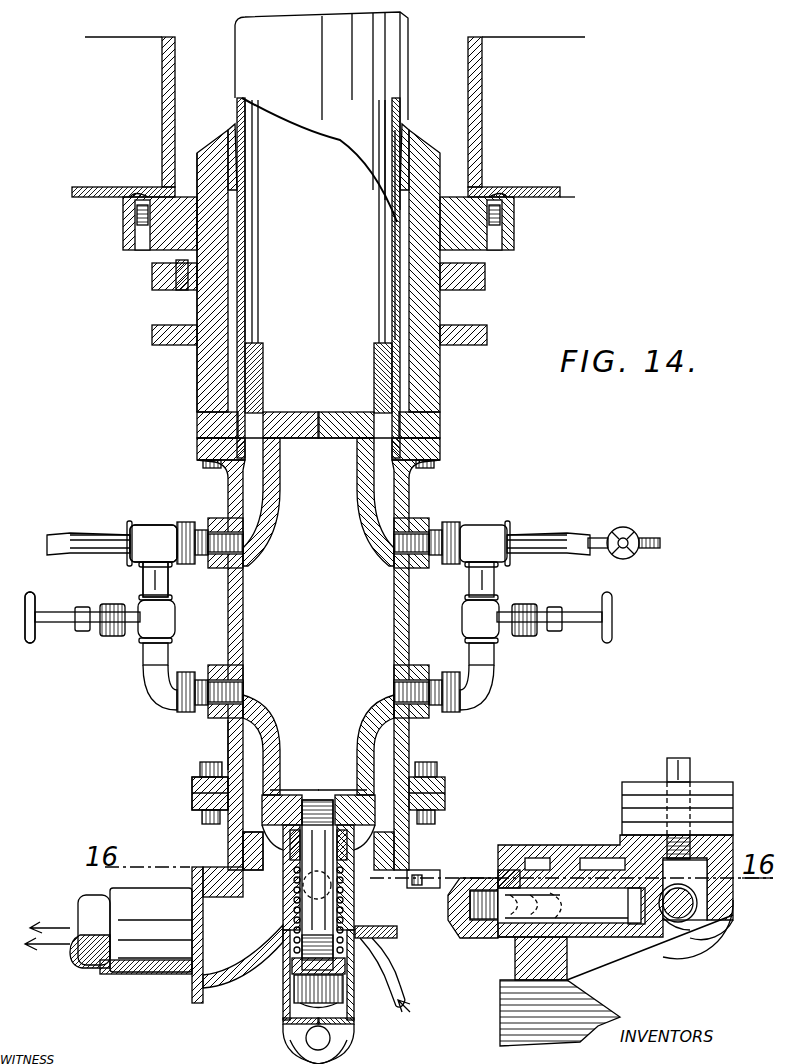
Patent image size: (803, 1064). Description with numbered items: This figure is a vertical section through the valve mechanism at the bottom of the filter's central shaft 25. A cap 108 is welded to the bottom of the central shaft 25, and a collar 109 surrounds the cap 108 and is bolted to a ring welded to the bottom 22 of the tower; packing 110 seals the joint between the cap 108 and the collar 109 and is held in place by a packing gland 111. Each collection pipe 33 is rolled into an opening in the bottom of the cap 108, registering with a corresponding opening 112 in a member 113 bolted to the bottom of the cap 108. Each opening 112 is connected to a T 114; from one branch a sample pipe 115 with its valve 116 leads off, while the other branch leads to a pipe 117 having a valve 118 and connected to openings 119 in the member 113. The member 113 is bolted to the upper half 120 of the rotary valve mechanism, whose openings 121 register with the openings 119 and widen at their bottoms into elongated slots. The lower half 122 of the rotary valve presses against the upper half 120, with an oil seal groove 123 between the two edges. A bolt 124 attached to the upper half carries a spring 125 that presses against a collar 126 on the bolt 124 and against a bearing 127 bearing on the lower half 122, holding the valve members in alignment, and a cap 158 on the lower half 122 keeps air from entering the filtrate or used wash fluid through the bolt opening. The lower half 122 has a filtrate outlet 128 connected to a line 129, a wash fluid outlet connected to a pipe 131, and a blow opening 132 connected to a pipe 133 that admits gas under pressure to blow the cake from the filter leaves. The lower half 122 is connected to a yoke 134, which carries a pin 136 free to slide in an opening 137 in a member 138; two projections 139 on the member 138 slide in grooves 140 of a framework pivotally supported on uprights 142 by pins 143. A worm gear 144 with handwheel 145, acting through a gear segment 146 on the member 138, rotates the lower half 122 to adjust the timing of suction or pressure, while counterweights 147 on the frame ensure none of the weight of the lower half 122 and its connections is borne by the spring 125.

The bottom of the tower 22 is at (538, 188).
The central shaft 25 is at (392, 74).
The collection pipe 33 is at (380, 288).
The cap 108 is at (202, 372).
The collar 109 is at (150, 294).
The packing 110 is at (150, 272).
The packing gland 111 is at (150, 334).
The opening 112 is at (378, 502).
The member 113 is at (300, 617).
The T 114 is at (155, 528).
The sample pipe 115 is at (95, 533).
The valve 116 is at (623, 527).
The pipe 117 is at (142, 580).
The valve 118 is at (36, 636).
The opening 119 is at (250, 745).
The upper half of the rotary valve mechanism 120 is at (262, 852).
The opening 121 is at (225, 793).
The lower half of the rotary valve mechanism 122 is at (397, 935).
The oil seal groove 123 is at (412, 868).
The bolt 124 is at (302, 890).
The spring 125 is at (294, 966).
The collar 126 is at (296, 985).
The bearing 127 is at (292, 840).
The filtrate outlet 128 is at (222, 972).
The line 129 is at (126, 976).
The pipe 131 is at (90, 904).
The blow opening 132 is at (395, 908).
The pipe 133 is at (388, 968).
The yoke 134 is at (475, 938).
The pin 136 is at (576, 900).
The opening 137 is at (632, 926).
The member 138 is at (560, 872).
The projection 139 is at (505, 950).
The groove 140 is at (518, 946).
The upright 142 is at (502, 1012).
The pin 143 is at (500, 874).
The worm gear 144 is at (690, 920).
The handwheel 145 is at (722, 936).
The gear segment 146 is at (662, 930).
The counterweight 147 is at (642, 788).
The cap 158 is at (288, 1050).